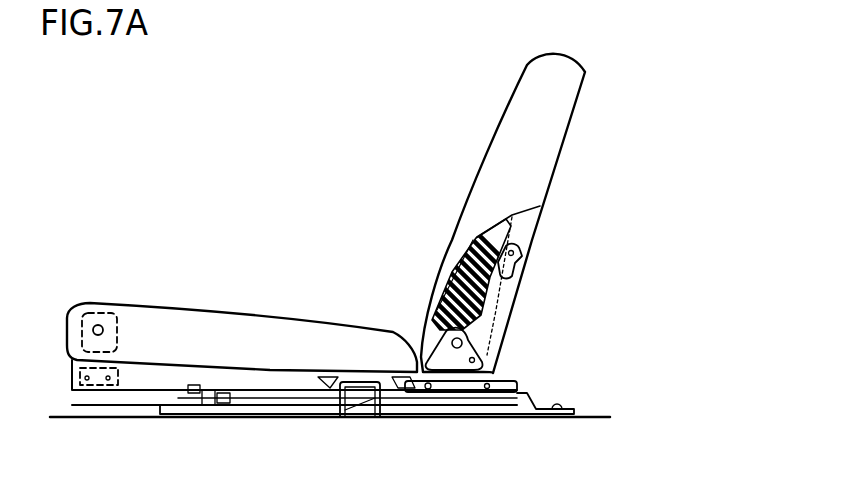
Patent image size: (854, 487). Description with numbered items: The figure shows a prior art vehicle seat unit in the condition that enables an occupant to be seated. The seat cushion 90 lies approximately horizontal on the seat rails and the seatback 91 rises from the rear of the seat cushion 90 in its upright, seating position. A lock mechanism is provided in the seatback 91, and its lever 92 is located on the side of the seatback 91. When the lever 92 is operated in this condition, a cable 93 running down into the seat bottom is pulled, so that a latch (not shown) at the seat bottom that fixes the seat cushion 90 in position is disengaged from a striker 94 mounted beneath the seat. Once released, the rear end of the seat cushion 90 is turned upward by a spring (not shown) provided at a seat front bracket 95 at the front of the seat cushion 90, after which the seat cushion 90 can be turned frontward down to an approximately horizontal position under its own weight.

The seat cushion 90 is at (253, 327).
The seatback 91 is at (515, 153).
The lever 92 is at (520, 258).
The cable 93 is at (413, 390).
The striker 94 is at (340, 417).
The seat front bracket 95 is at (118, 315).